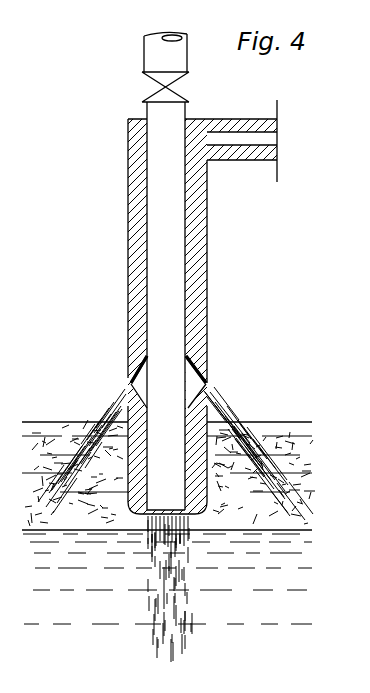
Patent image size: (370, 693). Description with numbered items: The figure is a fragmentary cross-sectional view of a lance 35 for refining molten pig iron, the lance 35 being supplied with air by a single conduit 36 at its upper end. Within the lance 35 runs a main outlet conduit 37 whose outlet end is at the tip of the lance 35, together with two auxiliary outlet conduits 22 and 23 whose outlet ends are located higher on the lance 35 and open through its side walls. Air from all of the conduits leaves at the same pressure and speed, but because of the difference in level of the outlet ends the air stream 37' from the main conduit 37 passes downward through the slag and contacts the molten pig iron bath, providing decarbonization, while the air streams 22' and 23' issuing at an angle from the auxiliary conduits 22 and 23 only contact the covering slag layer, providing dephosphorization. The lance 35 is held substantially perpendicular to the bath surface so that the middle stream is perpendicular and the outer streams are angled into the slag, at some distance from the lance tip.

The single conduit 36 is at (183, 61).
The lance 35 is at (203, 230).
The main outlet conduit 37 is at (196, 306).
The auxiliary outlet conduit 22 is at (112, 369).
The auxiliary outlet conduit 23 is at (214, 369).
The air stream 22' is at (71, 491).
The air stream 23' is at (258, 453).
The air stream 37' is at (195, 589).